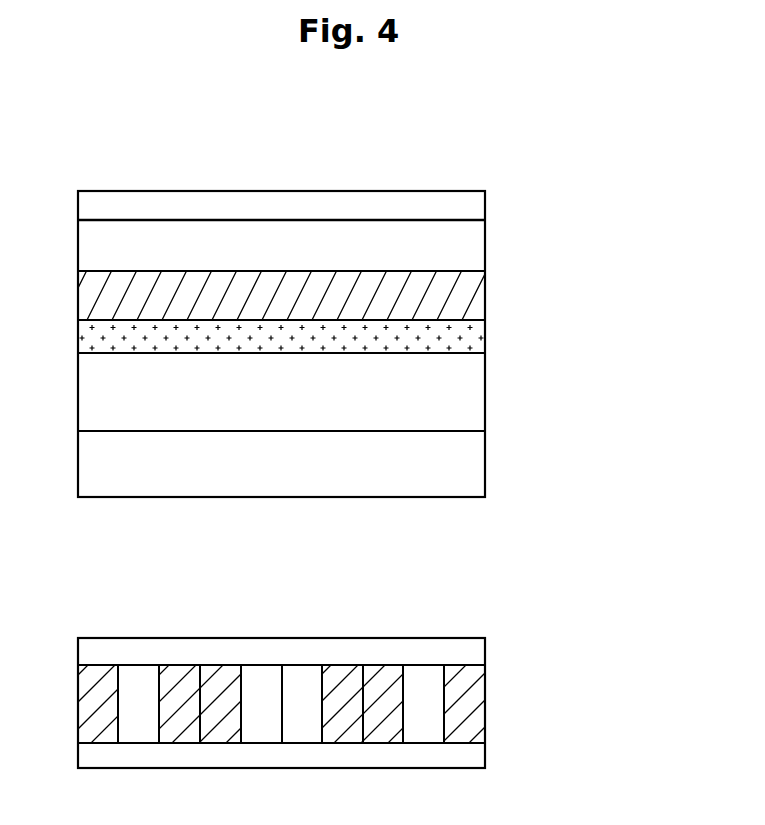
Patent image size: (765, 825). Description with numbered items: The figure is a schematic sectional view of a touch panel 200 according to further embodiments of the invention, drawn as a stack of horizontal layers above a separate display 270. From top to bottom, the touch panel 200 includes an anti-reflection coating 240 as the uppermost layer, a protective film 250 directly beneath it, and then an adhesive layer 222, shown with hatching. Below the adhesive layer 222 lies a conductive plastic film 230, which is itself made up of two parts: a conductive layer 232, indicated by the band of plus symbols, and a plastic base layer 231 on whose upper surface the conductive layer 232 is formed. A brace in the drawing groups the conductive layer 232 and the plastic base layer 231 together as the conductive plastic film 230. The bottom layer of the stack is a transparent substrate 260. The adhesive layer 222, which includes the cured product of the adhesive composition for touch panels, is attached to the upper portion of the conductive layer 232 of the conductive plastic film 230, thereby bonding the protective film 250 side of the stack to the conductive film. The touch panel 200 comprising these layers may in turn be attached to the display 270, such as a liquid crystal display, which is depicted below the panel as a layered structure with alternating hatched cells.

The touch panel 200 is at (354, 290).
The anti-reflection coating 240 is at (475, 205).
The protective film 250 is at (475, 245).
The adhesive layer 222 is at (475, 297).
The conductive layer 232 is at (475, 336).
The conductive plastic film 230 is at (362, 377).
The plastic base layer 231 is at (475, 400).
The transparent substrate 260 is at (475, 469).
The display 270 is at (502, 690).